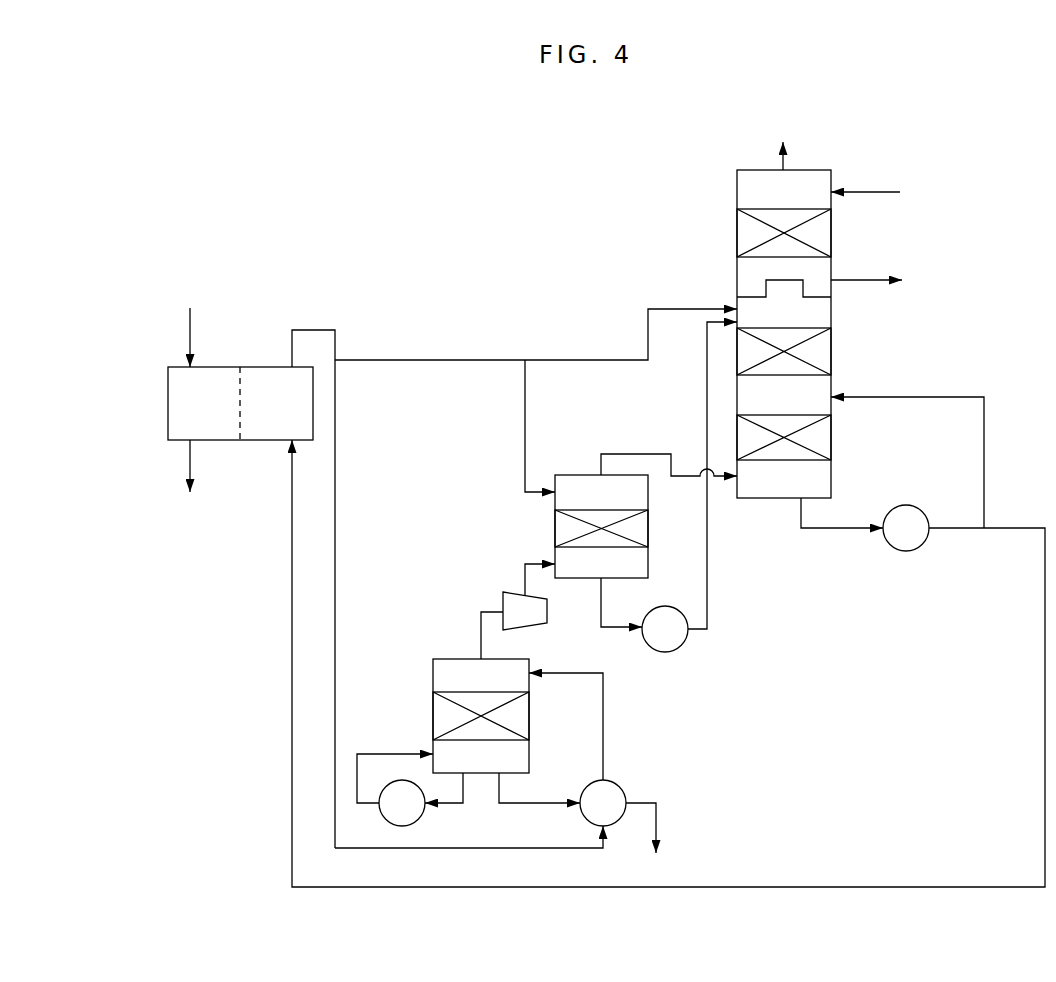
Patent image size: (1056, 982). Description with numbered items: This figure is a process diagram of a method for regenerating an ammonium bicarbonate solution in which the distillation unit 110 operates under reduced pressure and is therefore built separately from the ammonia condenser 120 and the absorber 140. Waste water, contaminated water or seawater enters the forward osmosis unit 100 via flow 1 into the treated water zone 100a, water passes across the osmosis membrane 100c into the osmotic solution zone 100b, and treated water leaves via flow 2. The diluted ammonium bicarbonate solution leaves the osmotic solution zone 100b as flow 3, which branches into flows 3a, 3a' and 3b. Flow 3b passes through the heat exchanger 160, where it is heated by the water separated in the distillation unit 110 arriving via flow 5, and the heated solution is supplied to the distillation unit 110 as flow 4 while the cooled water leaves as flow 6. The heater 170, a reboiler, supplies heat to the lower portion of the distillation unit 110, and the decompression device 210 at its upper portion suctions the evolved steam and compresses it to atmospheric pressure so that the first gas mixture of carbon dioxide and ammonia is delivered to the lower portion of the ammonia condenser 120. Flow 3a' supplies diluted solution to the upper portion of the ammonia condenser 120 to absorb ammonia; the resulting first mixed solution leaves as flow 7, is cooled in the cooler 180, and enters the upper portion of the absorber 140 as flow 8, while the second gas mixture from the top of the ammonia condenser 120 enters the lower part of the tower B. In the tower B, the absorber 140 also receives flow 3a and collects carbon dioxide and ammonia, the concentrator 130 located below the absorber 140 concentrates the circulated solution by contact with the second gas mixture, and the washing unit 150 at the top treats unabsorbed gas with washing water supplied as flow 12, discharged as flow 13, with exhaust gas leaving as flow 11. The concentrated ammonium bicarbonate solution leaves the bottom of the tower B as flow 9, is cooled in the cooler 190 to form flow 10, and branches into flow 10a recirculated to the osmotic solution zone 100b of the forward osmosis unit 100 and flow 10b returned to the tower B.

The forward osmosis unit 100 is at (167, 386).
The treated water zone 100a is at (204, 405).
The osmotic solution zone 100b is at (276, 405).
The osmosis membrane 100c is at (240, 366).
The distillation unit 110 is at (432, 715).
The ammonia condenser 120 is at (553, 528).
The concentrator 130 is at (833, 437).
The absorber 140 is at (833, 352).
The washing unit 150 is at (833, 235).
The heat exchanger 160 is at (612, 782).
The heater (reboiler) 170 is at (426, 813).
The cooler 180 is at (666, 652).
The cooler 190 is at (916, 506).
The decompression device 210 is at (502, 600).
The distillation column B is at (768, 334).
The flow of waste water, contaminated water, or seawater 1 is at (189, 322).
The flow of treated water 2 is at (189, 483).
The flow of diluted ammonium bicarbonate solution 3 is at (313, 576).
The flow of diluted ammonium bicarbonate solution 3a is at (536, 335).
The flow of diluted ammonium bicarbonate solution 3a' is at (543, 426).
The flow of diluted ammonium bicarbonate solution 3b is at (469, 851).
The flow of heated ammonium bicarbonate solution 4 is at (566, 711).
The flow of water separated from distillation unit 5 is at (539, 788).
The flow of cooled water 6 is at (645, 843).
The flow of first mixed solution 7 is at (621, 617).
The flow of cooled first mixed solution 8 is at (712, 475).
The flow of concentrated ammonium bicarbonate solution 9 is at (842, 513).
The flow of cooled ammonium bicarbonate solution 10 is at (956, 515).
The flow of cooled ammonium bicarbonate solution 10a is at (668, 663).
The flow of cooled ammonium bicarbonate solution 10b is at (907, 449).
The flow of exhaust gas 11 is at (783, 142).
The flow of washing water 12 is at (882, 194).
The discharge flow of washing water 13 is at (883, 279).